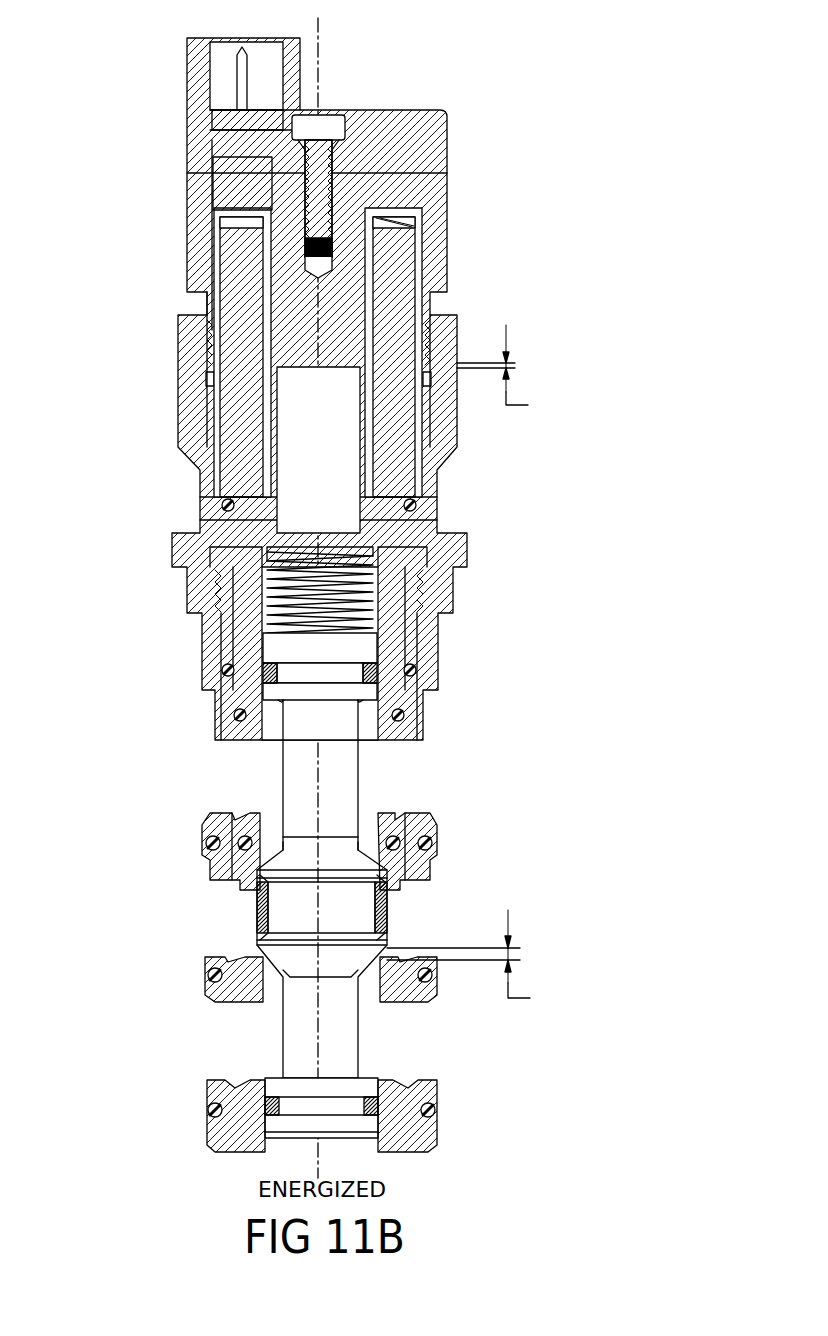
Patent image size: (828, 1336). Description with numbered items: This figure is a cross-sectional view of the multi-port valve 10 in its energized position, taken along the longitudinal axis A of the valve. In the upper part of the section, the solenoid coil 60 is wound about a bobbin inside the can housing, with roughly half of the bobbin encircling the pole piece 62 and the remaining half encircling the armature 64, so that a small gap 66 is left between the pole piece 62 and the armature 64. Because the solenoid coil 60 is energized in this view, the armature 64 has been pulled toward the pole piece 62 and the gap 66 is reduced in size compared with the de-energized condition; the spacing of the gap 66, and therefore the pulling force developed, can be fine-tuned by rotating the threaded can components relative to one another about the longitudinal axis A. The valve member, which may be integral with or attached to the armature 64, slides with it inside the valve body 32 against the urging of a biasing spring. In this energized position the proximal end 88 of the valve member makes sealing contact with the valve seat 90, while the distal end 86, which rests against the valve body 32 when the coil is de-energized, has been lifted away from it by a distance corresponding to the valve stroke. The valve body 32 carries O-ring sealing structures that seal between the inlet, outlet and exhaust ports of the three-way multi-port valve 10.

The multi-port valve 10 is at (118, 220).
The valve body 32 is at (180, 912).
The solenoid coil 60 is at (407, 273).
The pole piece 62 is at (288, 337).
The armature 64 is at (345, 430).
The gap 66 is at (476, 365).
The distal end 86 is at (363, 962).
The proximal end 88 is at (278, 855).
The valve seat 90 is at (390, 822).
The longitudinal axis A is at (318, 74).